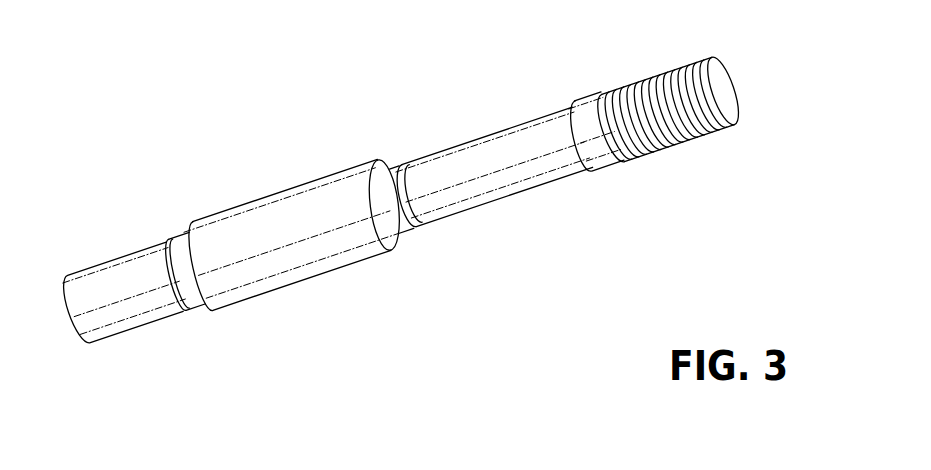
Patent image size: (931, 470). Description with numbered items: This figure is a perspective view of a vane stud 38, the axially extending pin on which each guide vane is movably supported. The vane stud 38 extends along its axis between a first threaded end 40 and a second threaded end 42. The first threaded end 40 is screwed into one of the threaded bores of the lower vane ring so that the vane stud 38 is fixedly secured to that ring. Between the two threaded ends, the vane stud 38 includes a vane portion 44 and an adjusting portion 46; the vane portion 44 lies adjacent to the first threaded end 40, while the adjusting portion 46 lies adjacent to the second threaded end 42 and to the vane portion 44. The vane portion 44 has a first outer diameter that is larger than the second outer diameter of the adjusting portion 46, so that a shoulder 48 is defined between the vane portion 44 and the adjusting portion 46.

The vane stud 38 is at (725, 85).
The first threaded end 40 is at (121, 271).
The second threaded end 42 is at (667, 79).
The vane portion 44 is at (268, 222).
The adjusting portion 46 is at (518, 180).
The shoulder 48 is at (412, 238).